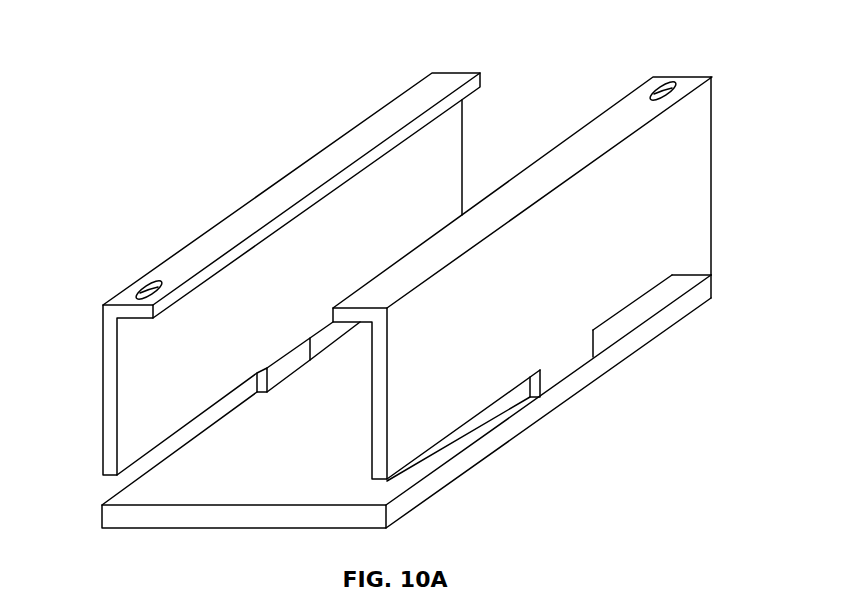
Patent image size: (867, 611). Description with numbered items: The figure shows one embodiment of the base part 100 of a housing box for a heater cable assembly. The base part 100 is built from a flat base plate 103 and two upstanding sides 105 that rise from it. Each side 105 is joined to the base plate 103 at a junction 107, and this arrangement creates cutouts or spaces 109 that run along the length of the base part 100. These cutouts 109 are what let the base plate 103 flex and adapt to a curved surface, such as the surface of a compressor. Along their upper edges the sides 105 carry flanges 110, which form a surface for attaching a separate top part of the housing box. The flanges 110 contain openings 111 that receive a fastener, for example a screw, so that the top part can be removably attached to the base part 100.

The base part 100 is at (118, 91).
The base plate 103 is at (226, 487).
The sides 105 is at (440, 151).
The junction 107 is at (563, 367).
The cutouts 109 is at (115, 482).
The flanges 110 is at (378, 120).
The openings 111 is at (150, 285).